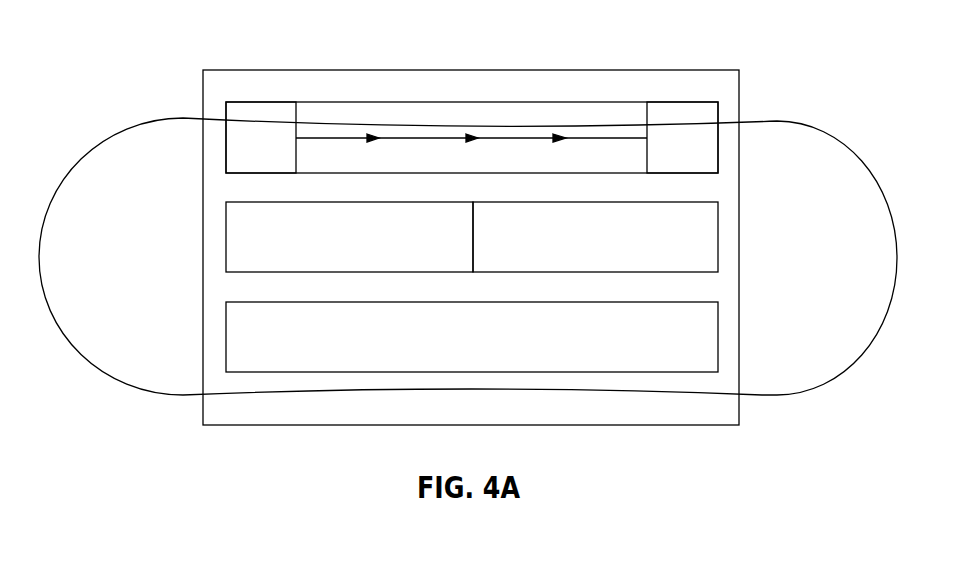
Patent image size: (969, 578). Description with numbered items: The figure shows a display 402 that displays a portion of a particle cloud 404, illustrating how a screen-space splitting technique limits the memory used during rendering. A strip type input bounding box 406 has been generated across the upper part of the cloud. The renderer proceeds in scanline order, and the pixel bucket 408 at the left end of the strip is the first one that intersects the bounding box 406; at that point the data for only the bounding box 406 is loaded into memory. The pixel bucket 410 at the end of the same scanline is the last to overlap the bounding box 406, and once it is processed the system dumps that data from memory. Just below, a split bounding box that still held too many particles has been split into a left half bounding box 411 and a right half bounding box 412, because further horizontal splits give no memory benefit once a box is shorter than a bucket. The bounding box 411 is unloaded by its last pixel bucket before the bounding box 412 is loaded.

The display 402 is at (276, 70).
The particle cloud 404 is at (790, 122).
The strip type input bounding box 406 is at (462, 102).
The pixel bucket 408 is at (238, 140).
The pixel bucket 410 is at (693, 143).
The left half bounding box 411 is at (238, 231).
The right half bounding box 412 is at (693, 233).